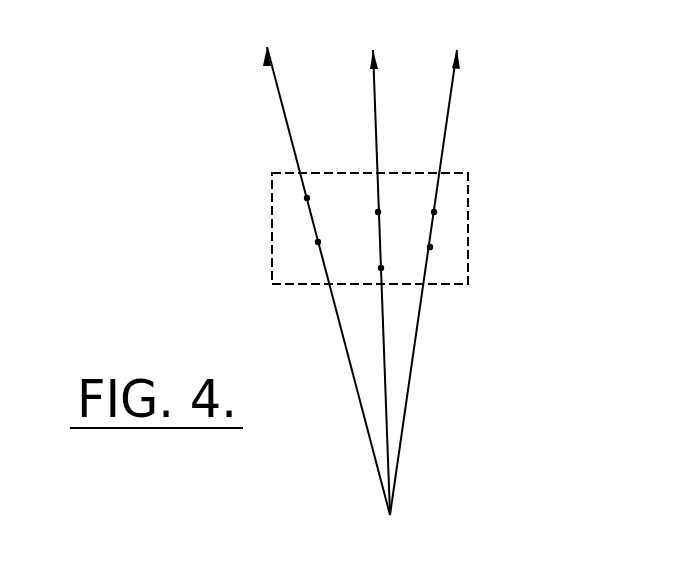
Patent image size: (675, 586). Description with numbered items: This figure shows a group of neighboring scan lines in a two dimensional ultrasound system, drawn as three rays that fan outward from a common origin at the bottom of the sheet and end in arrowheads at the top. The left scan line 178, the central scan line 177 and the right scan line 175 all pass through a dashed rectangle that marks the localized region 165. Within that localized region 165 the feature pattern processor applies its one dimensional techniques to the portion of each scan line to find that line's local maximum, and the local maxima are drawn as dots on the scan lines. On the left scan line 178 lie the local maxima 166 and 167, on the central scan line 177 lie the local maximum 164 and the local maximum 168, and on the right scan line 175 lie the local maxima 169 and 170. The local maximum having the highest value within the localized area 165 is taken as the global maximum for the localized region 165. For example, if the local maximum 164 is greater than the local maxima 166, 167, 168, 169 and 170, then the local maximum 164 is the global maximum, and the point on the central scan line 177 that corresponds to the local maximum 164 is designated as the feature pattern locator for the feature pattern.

The local maximum 164 is at (408, 176).
The localized region 165 is at (409, 228).
The local maximum 166 is at (265, 175).
The local maximum 167 is at (269, 214).
The local maximum 168 is at (452, 287).
The local maximum 169 is at (489, 184).
The local maximum 170 is at (483, 261).
The scan line 175 is at (460, 282).
The scan line 177 is at (416, 267).
The scan line 178 is at (326, 277).